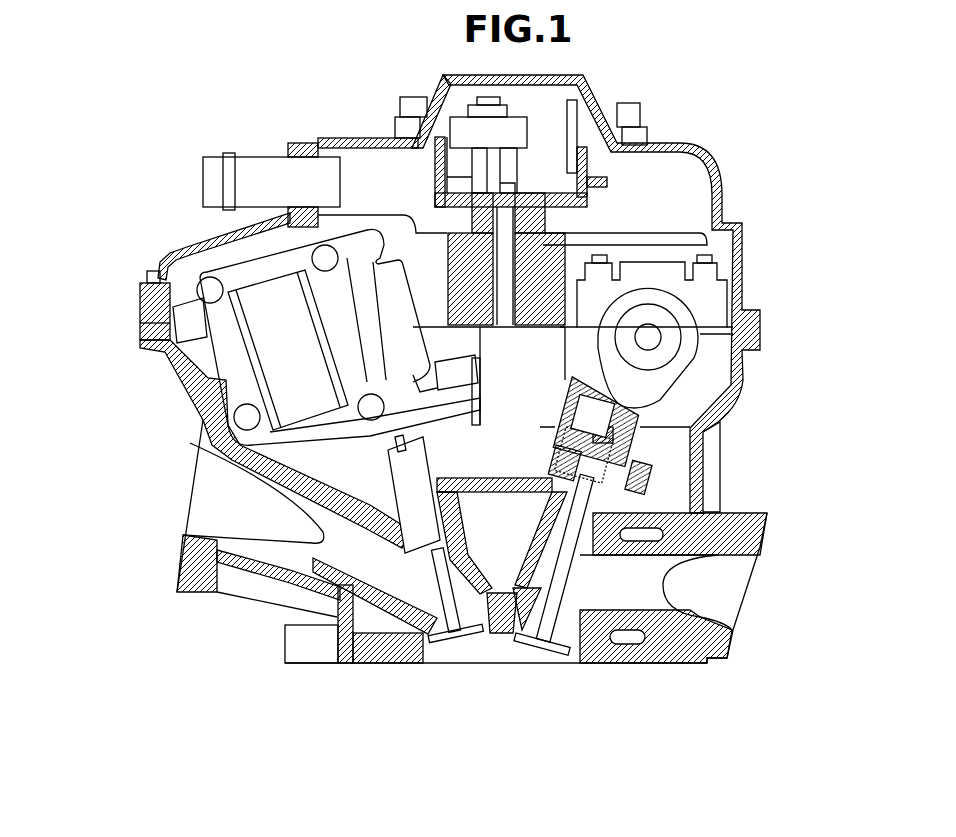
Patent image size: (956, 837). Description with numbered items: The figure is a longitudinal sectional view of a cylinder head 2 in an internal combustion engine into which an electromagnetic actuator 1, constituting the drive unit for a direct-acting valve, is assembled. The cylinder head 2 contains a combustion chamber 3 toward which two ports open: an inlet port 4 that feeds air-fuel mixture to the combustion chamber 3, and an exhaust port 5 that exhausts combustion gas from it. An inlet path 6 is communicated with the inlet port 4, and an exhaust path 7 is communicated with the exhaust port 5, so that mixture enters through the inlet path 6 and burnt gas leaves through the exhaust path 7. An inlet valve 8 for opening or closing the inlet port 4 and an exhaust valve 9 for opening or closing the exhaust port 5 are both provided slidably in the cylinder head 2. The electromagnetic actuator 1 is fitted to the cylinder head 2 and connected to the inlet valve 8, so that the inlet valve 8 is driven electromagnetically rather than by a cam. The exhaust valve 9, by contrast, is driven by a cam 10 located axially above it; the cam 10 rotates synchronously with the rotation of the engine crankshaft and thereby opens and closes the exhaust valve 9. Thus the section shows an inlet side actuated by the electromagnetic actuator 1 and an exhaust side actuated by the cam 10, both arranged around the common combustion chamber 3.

The electromagnetic actuator 1 is at (280, 308).
The cylinder head 2 is at (743, 390).
The combustion chamber 3 is at (495, 647).
The inlet port 4 is at (455, 665).
The exhaust port 5 is at (563, 670).
The inlet path 6 is at (220, 500).
The exhaust path 7 is at (650, 597).
The inlet valve 8 is at (323, 567).
The exhaust valve 9 is at (570, 583).
The cam 10 is at (693, 310).